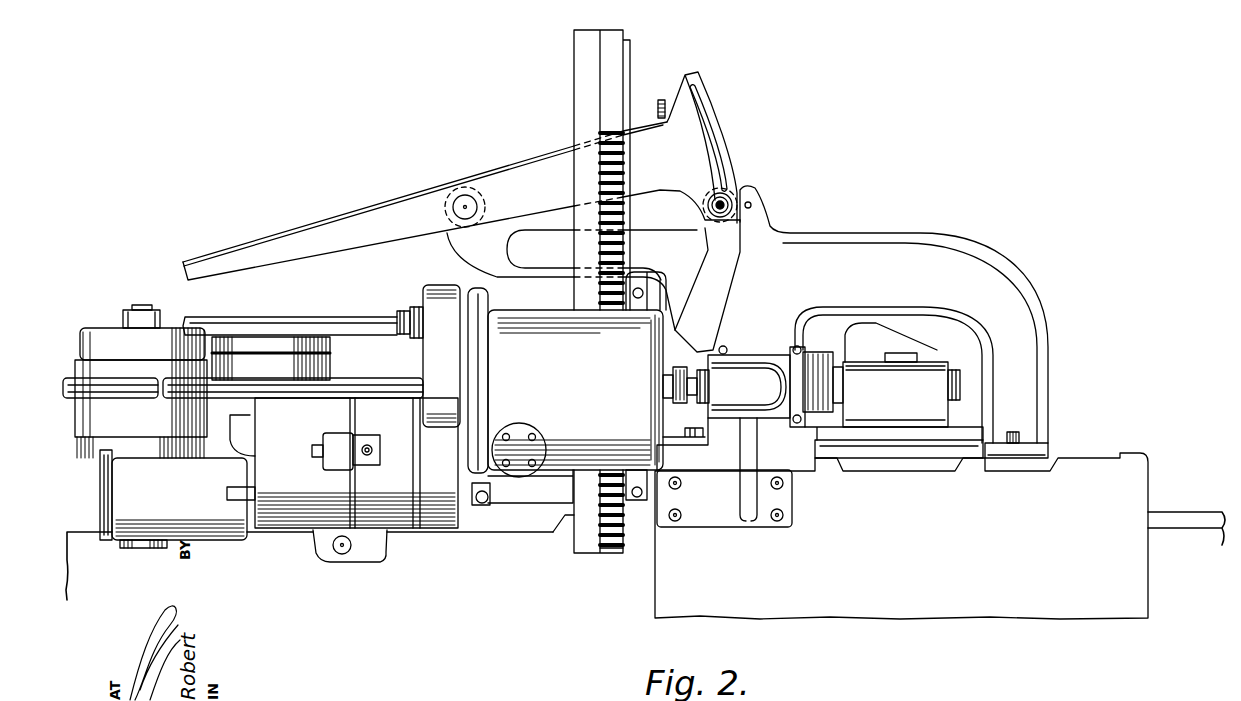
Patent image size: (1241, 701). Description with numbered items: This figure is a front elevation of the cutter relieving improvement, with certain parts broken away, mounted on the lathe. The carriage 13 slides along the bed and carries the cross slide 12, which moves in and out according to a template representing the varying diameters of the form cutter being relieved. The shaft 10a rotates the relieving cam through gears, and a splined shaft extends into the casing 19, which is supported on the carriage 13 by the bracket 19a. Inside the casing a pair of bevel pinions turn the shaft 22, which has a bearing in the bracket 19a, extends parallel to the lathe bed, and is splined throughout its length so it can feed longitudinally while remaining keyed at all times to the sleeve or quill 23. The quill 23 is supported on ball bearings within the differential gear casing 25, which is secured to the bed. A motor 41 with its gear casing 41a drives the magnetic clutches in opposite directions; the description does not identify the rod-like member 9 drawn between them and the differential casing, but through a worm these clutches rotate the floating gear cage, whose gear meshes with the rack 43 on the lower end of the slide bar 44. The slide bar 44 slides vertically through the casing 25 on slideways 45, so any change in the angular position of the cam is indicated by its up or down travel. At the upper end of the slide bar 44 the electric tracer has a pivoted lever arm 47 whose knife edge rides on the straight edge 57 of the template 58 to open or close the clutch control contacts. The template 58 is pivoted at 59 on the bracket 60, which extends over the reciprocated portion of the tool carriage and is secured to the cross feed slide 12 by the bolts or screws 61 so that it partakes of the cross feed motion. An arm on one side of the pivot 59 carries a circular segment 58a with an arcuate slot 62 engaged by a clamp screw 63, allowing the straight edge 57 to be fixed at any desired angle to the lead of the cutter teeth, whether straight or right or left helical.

The piston rod 9 is at (345, 320).
The shaft 10a is at (962, 383).
The cross slide 12 is at (917, 450).
The carriage 13 is at (645, 536).
The casing 19 is at (750, 360).
The bracket 19a is at (724, 472).
The shaft 22 is at (380, 367).
The sleeve or quill 23 is at (682, 367).
The differential gear casing 25 is at (598, 406).
The motor 41 is at (202, 426).
The gear casing 41a is at (342, 480).
The rack 43 is at (630, 552).
The slide bar 44 is at (582, 83).
The slideways 45 is at (567, 292).
The lever arm 47 is at (660, 100).
The straight edge 57 is at (517, 162).
The template 58 is at (428, 223).
The circular segment 58a is at (710, 92).
The pivot 59 is at (463, 207).
The bracket 60 is at (807, 232).
The bolts or screws 61 is at (1015, 432).
The arcuate slot 62 is at (713, 155).
The clamp screw 63 is at (723, 196).